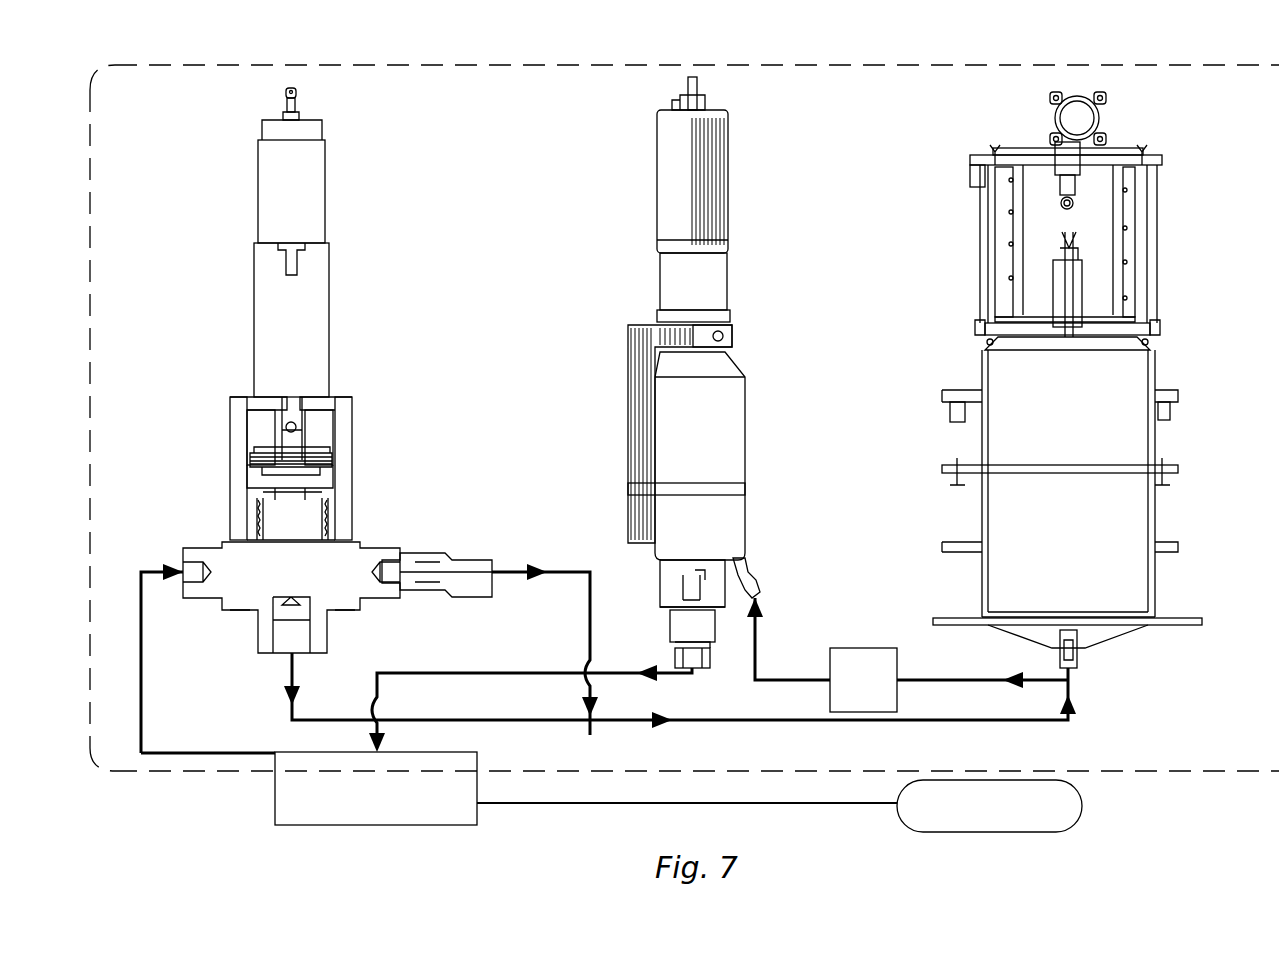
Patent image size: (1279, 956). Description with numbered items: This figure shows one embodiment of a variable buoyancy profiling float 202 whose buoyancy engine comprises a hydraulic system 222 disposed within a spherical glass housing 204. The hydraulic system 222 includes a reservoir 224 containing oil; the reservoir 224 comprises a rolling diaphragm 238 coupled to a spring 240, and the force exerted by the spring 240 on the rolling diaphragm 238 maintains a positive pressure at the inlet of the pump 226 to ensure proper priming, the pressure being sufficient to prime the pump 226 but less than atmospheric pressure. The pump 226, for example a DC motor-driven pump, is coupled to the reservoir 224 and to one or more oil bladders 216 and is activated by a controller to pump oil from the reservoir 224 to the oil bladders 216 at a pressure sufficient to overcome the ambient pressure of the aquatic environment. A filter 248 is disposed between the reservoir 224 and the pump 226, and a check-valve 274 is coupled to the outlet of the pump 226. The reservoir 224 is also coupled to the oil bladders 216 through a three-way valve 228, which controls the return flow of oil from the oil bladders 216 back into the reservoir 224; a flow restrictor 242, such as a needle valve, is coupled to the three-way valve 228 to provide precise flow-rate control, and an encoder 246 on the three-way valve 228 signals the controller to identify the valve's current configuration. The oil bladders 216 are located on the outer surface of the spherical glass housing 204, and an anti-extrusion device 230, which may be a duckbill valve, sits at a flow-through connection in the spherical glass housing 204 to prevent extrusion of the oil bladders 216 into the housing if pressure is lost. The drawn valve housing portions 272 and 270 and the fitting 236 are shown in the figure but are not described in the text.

The variable buoyancy profiling float 202 is at (684, 399).
The spherical glass housing 204 is at (557, 68).
The hydraulic system 222 is at (535, 84).
The valve actuator upper housing 272 is at (322, 160).
The valve actuator lower housing 270 is at (330, 310).
The encoder 246 is at (325, 448).
The three-way valve 228 is at (357, 542).
The flow restrictor 242 is at (440, 555).
The pump 226 is at (742, 435).
The check-valve 274 is at (683, 580).
The reservoir 224 is at (1062, 370).
The flange connector 236 is at (1058, 105).
The spring 240 is at (1010, 225).
The rolling diaphragm 238 is at (1140, 385).
The filter 248 is at (863, 680).
The anti-extrusion device 230 is at (292, 820).
The oil bladders 216 is at (1083, 805).